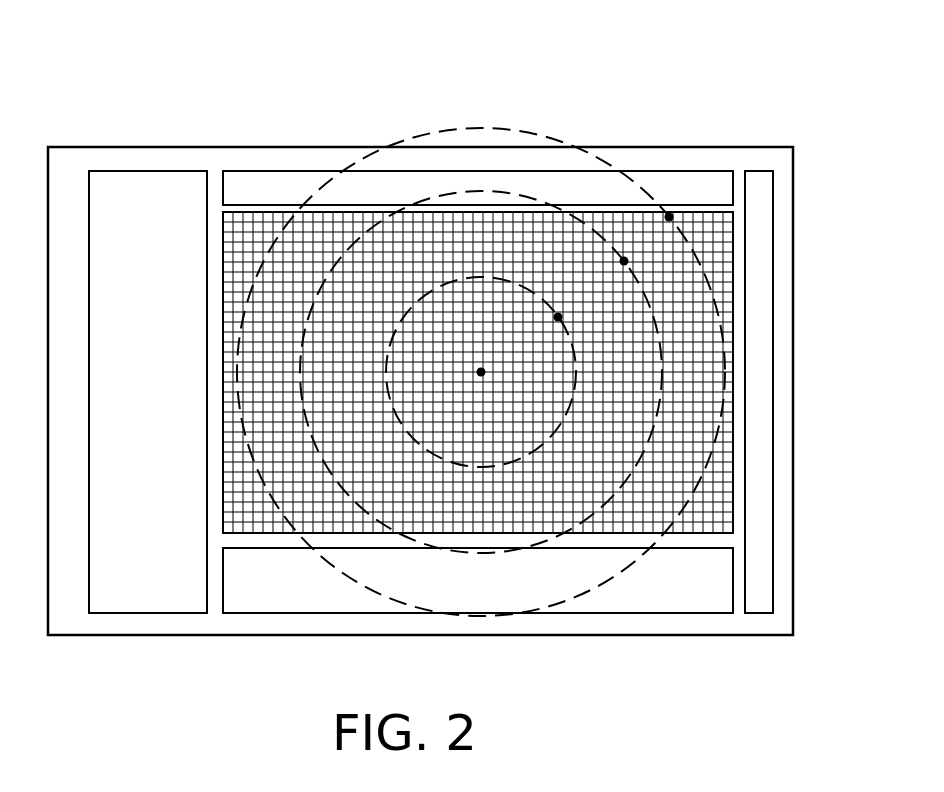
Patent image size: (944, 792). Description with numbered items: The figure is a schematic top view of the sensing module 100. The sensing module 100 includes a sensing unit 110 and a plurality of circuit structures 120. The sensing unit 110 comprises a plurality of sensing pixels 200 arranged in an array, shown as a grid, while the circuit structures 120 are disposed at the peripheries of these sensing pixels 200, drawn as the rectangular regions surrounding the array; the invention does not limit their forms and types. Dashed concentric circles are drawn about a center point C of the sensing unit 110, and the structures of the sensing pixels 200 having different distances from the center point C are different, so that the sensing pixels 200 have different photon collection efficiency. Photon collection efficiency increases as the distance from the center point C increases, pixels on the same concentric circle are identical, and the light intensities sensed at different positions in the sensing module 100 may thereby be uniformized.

The sensing module 100 is at (848, 708).
The sensing unit 110 is at (690, 320).
The circuit structures 120 is at (252, 189).
The center point C is at (481, 366).
The sensing pixels 200 is at (500, 315).